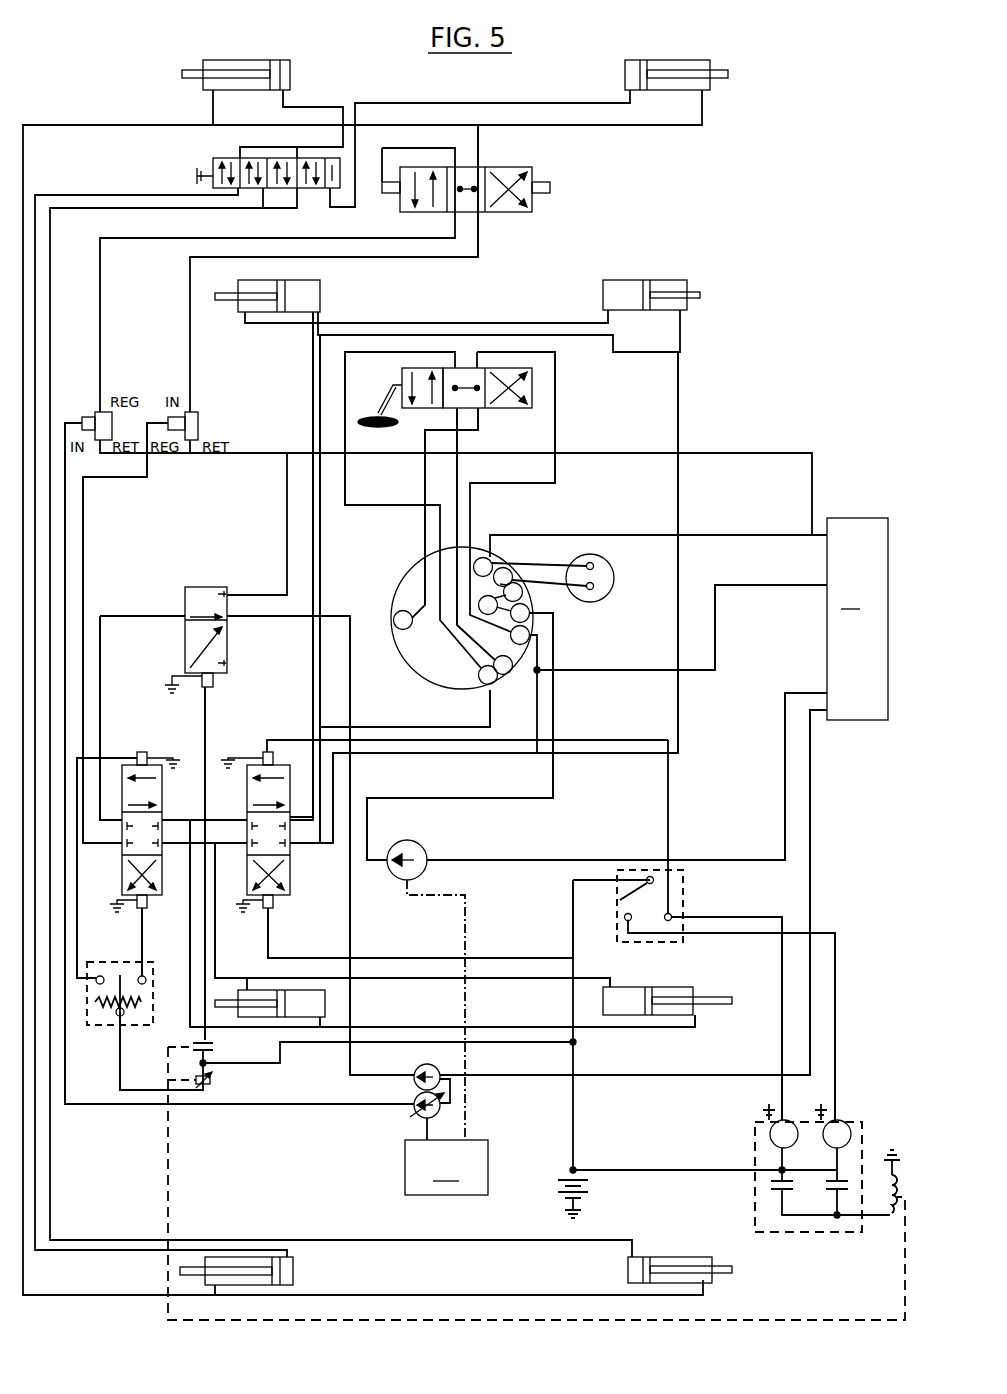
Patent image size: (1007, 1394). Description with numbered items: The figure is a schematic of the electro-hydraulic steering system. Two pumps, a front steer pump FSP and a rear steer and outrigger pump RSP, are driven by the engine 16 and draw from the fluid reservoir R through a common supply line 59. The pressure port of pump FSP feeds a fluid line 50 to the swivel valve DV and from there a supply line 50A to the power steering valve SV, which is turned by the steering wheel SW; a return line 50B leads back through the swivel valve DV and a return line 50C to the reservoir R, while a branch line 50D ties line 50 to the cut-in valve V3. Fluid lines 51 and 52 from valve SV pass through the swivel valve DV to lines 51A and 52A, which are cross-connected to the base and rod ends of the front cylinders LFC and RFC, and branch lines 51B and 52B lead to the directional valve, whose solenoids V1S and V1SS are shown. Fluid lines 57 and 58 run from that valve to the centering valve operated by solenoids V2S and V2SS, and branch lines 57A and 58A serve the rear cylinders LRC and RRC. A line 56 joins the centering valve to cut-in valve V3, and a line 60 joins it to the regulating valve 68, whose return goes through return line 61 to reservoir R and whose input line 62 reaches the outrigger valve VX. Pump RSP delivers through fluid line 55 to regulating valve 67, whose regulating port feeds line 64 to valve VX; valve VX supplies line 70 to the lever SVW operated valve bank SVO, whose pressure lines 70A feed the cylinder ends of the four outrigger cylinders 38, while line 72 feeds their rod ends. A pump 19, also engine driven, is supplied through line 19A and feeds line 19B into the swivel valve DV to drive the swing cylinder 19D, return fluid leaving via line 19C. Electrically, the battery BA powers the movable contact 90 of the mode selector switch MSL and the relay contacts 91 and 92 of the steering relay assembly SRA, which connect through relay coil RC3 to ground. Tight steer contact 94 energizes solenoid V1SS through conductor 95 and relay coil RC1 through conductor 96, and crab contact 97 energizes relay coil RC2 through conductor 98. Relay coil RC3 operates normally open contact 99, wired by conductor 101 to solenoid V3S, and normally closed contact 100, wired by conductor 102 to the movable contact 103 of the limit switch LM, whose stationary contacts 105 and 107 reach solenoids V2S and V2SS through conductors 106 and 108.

The outrigger cylinder 38 is at (254, 60).
The pressure fluid line 70A is at (93, 192).
The fluid line 72 is at (479, 150).
The fluid line 70 is at (382, 148).
The line 62 is at (479, 247).
The line 64 is at (143, 240).
The fluid line 55 is at (70, 420).
The regulating valve 67 is at (112, 423).
The regulating valve 68 is at (198, 423).
The line 60 is at (126, 479).
The return line 61 is at (244, 461).
The fluid line 51 is at (364, 352).
The fluid line 52 is at (557, 378).
The fluid line 51A is at (313, 400).
The branch line 51B is at (316, 703).
The fluid line 52A is at (683, 408).
The branch line 52B is at (318, 845).
The supply line 50A is at (423, 522).
The fluid return line 50B is at (459, 445).
The fluid line 50 is at (352, 677).
The branch line 50D is at (282, 618).
The fluid return line 50C is at (588, 670).
The line 56 is at (127, 618).
The line 19C is at (748, 530).
The line 19B is at (557, 720).
The line 19A is at (526, 860).
The swing cylinder 19D is at (614, 576).
The pump 19 is at (420, 846).
The conductor 101 is at (202, 706).
The fluid line 58 is at (178, 818).
The fluid line 57 is at (180, 850).
The conductor 108 is at (80, 882).
The conductor 106 is at (138, 925).
The stationary contact 107 is at (100, 976).
The stationary contact 105 is at (146, 980).
The movable contact 103 is at (122, 1016).
The conductor 102 is at (120, 1075).
The relay contact 99 is at (214, 1047).
The relay contact 100 is at (212, 1079).
The supply line 59 is at (628, 1076).
The branch line 57A is at (421, 980).
The branch line 58A is at (476, 1025).
The electrical conductor 95 is at (500, 957).
The movable contact 90 is at (618, 898).
The stationary contact 94 is at (624, 920).
The stationary contact 97 is at (677, 914).
The electrical conductor 98 is at (781, 1030).
The electrical conductor 96 is at (837, 1030).
The relay contact 92 is at (770, 1186).
The relay contact 91 is at (826, 1186).
The engine 16 is at (446, 1167).
The left front cylinder LFC is at (322, 293).
The right front cylinder RFC is at (603, 293).
The left rear cylinder LRC is at (266, 990).
The right rear cylinder RRC is at (672, 987).
The lever SVW is at (197, 176).
The valve bank SVO is at (228, 158).
The outrigger valve VX is at (532, 167).
The power steering valve SV is at (510, 398).
The steering wheel SW is at (384, 428).
The swivel valve DV is at (402, 582).
The fluid reservoir R is at (857, 619).
The cut-in valve V3 is at (195, 587).
The solenoid V3S is at (213, 680).
The solenoid V2SS is at (142, 752).
The solenoid V2S is at (148, 905).
The solenoid V1S is at (265, 752).
The solenoid V1SS is at (274, 903).
The limit switch LM is at (95, 1025).
The front steer pump FSP is at (415, 1071).
The rear steer and outrigger pump RSP is at (416, 1110).
The mode selector switch MSL is at (684, 875).
The relay coil RC1 is at (848, 1124).
The relay coil RC2 is at (770, 1136).
The relay coil RC3 is at (888, 1208).
The steering relay assembly SRA is at (806, 1233).
The battery BA is at (589, 1195).